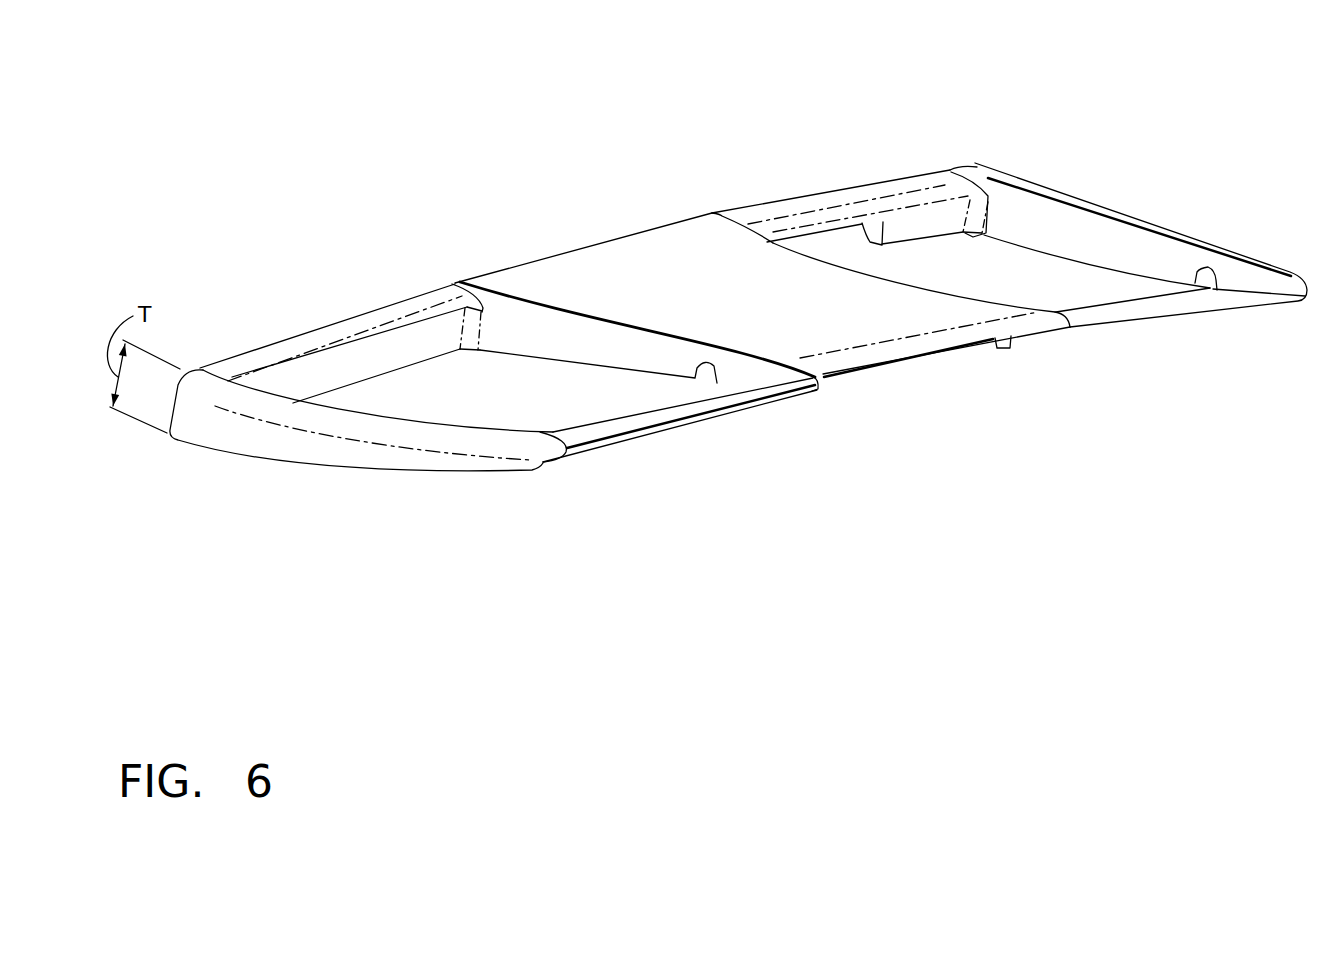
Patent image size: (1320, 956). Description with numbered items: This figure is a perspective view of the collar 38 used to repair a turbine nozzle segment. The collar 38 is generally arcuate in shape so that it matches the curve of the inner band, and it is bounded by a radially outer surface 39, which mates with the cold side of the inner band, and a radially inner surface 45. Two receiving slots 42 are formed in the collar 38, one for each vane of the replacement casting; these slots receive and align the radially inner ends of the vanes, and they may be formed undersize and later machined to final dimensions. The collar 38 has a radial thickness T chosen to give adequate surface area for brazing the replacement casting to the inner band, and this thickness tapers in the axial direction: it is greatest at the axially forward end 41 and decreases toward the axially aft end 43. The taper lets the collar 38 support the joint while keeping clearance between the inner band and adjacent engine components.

The collar 38 is at (738, 305).
The radially outer surface 39 is at (672, 304).
The axially forward end 41 is at (405, 300).
The receiving slots 42 is at (900, 231).
The axially aft end 43 is at (755, 405).
The radially inner surface 45 is at (550, 468).